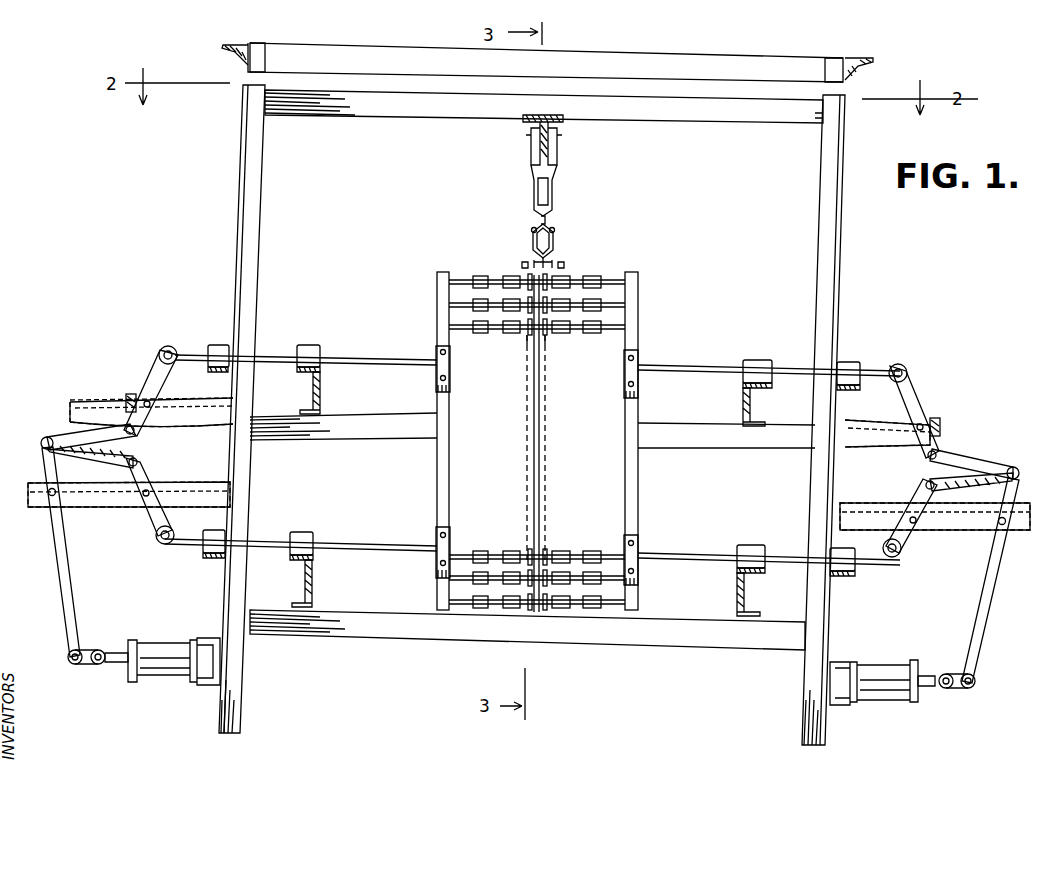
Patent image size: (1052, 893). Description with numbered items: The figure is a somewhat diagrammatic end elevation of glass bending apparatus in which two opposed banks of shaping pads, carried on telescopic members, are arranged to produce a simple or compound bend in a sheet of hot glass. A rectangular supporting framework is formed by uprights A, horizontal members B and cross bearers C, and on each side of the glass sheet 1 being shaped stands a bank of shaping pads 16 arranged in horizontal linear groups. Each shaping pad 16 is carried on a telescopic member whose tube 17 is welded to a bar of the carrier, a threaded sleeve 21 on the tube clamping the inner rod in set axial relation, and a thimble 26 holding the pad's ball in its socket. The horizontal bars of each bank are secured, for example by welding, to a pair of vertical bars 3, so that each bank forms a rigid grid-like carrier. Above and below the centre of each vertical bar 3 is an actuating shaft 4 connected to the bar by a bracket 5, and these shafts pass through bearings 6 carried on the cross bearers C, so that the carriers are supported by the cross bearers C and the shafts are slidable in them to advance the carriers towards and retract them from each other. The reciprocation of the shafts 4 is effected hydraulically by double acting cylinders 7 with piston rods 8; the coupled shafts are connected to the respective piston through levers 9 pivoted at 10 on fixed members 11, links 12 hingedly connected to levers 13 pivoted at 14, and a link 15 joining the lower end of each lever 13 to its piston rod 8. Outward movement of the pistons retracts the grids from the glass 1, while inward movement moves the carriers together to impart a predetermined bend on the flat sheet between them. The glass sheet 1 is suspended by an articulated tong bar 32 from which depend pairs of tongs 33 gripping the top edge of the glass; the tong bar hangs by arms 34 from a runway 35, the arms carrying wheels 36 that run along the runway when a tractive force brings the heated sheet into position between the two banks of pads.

The glass sheet 1 is at (522, 489).
The vertical bars 3 is at (436, 492).
The actuating shaft 4 is at (372, 354).
The bracket 5 is at (435, 346).
The bearings 6 is at (217, 344).
The double acting cylinders 7 is at (166, 641).
The piston rods 8 is at (110, 650).
The levers 9 is at (150, 380).
The pivot 10 is at (143, 404).
The fixed members 11 is at (188, 418).
The links 12 is at (90, 434).
The levers 13 is at (75, 578).
The pivot 14 is at (51, 497).
The link 15 is at (88, 665).
The shaping pad 16 is at (527, 335).
The tube 17 is at (460, 278).
The sleeve 21 is at (487, 276).
The thimble 26 is at (508, 333).
The tong bar 32 is at (537, 196).
The tongs 33 is at (555, 240).
The arms 34 is at (556, 176).
The runway 35 is at (527, 123).
The wheels 36 is at (558, 152).
The uprights A is at (237, 181).
The horizontal members B is at (349, 47).
The cross bearers C is at (325, 402).